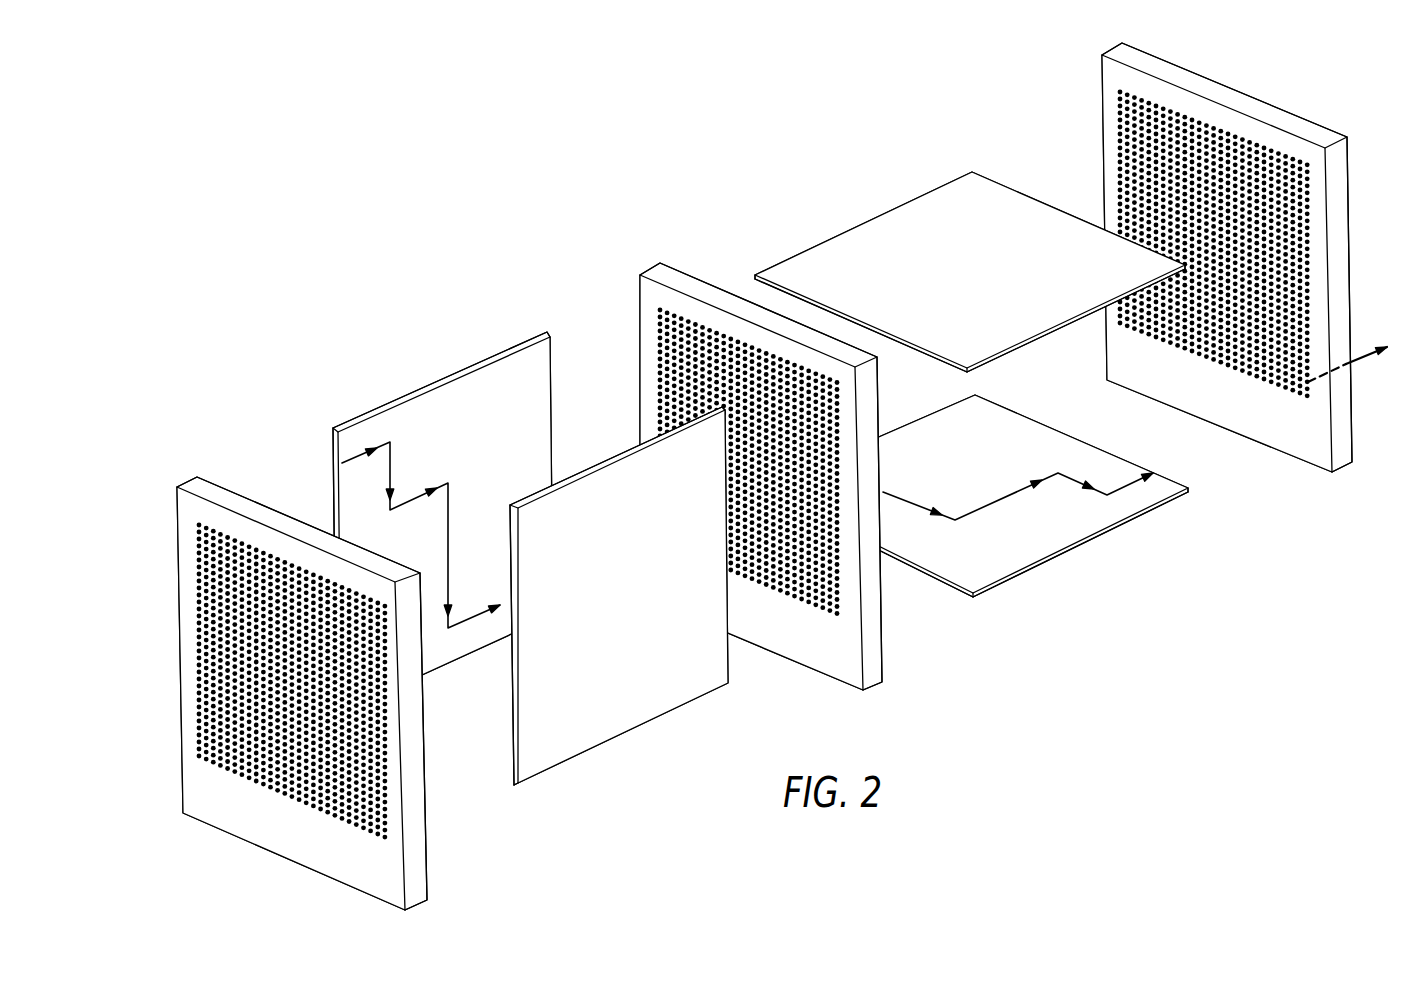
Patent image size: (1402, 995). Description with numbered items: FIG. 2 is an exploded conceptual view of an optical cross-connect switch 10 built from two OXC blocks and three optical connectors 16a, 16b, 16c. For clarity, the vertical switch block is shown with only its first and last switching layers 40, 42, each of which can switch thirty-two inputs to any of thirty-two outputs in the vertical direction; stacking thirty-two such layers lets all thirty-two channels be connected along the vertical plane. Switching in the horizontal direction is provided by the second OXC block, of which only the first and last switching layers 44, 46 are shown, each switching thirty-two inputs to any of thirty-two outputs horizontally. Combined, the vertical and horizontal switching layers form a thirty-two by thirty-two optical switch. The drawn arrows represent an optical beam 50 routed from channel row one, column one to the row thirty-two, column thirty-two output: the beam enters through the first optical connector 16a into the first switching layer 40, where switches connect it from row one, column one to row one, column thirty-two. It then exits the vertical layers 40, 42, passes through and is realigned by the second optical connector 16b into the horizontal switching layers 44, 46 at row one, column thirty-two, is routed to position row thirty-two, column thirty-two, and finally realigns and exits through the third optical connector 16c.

The fuel cell assembly 10 is at (960, 82).
The first optical connector 16a is at (263, 661).
The second optical connector 16b is at (685, 285).
The third optical connector 16c is at (1218, 98).
The first switching layer 40 is at (513, 372).
The last switching layer 42 is at (587, 738).
The first switching layer 44 is at (965, 190).
The last switching layer 46 is at (998, 543).
The optical beam 50 is at (198, 524).